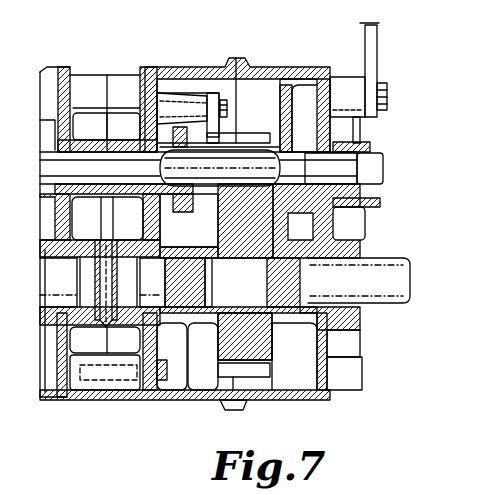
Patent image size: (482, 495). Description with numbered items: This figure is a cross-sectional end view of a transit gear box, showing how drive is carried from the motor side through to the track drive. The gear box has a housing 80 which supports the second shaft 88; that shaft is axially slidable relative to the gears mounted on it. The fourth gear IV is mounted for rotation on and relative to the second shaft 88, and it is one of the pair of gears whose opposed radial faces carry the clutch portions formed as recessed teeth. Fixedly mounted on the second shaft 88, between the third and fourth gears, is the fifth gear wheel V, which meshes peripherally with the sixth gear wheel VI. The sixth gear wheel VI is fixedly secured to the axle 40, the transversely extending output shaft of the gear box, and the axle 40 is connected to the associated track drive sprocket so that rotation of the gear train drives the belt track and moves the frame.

The second shaft 88 is at (70, 158).
The axle 40 is at (370, 270).
The housing 80 is at (130, 383).
The fifth gear wheel V is at (203, 157).
The fourth gear IV is at (297, 77).
The sixth gear wheel VI is at (220, 360).